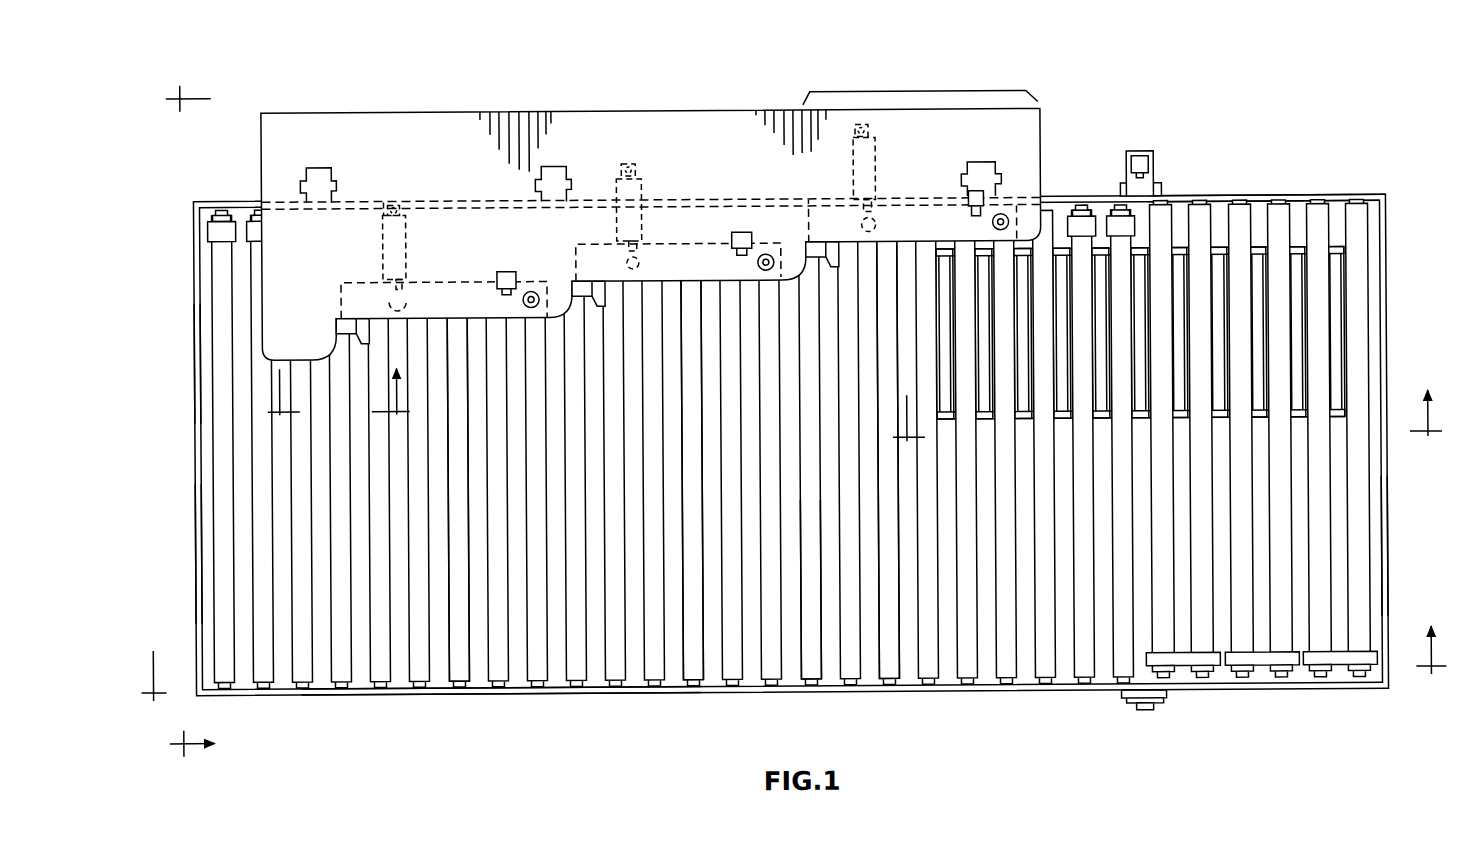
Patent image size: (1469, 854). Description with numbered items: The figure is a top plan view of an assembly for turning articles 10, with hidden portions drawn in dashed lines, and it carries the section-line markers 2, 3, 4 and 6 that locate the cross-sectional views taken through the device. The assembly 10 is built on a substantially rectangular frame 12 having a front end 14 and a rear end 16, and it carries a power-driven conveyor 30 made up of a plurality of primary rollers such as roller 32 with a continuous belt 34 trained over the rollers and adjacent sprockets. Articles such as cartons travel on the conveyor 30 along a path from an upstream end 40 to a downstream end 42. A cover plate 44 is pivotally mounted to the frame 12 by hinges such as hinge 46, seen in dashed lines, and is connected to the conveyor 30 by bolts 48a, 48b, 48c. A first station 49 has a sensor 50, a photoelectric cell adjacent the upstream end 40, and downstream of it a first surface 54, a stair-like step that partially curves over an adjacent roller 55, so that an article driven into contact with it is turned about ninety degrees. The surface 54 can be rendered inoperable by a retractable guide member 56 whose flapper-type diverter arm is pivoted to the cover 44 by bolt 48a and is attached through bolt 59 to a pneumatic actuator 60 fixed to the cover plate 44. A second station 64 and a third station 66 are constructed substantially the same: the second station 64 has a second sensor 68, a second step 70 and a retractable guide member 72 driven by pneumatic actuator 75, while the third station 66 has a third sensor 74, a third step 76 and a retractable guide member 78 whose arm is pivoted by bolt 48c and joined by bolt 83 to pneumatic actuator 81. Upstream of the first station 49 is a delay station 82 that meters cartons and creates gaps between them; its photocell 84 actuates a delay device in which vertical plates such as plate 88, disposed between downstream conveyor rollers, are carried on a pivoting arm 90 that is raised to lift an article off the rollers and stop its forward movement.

The assembly for turning articles 10 is at (1250, 55).
The frame 12 is at (540, 691).
The front end 14 is at (1388, 280).
The rear end 16 is at (193, 356).
The conveyor 30 is at (1345, 196).
The primary roller 32 is at (1103, 657).
The continuous belt 34 is at (1102, 214).
The upstream end 40 is at (1393, 540).
The downstream end 42 is at (190, 546).
The cover plate 44 is at (405, 109).
The hinge 46 is at (331, 168).
The bolt 48a is at (1001, 214).
The bolt 48b is at (767, 253).
The bolt 48c is at (532, 289).
The first station 49 is at (920, 79).
The sensor 50 is at (968, 208).
The first surface 54 is at (821, 243).
The roller 55 is at (820, 657).
The retractable guide member 56 is at (888, 258).
The bolt 59 is at (878, 224).
The pneumatic actuator 60 is at (878, 138).
The second station 64 is at (718, 192).
The third station 66 is at (447, 196).
The second sensor 68 is at (737, 236).
The second surface 70 is at (584, 284).
The retractable guide member 72 is at (690, 299).
The third sensor 74 is at (497, 278).
The pneumatic actuator 75 is at (644, 178).
The third surface 76 is at (343, 327).
The retractable guide member 78 is at (456, 337).
The pneumatic actuator 81 is at (384, 244).
The delay station 82 is at (1200, 186).
The bolt 83 is at (408, 302).
The sensor 84 is at (1141, 158).
The vertical plate 88 is at (1338, 329).
The pivoting arm 90 is at (1104, 421).
The section line 2- 2 is at (793, 667).
The section line 3- 3 is at (338, 398).
The section line 4- 4 is at (180, 424).
The section line 6- 6 is at (1165, 421).